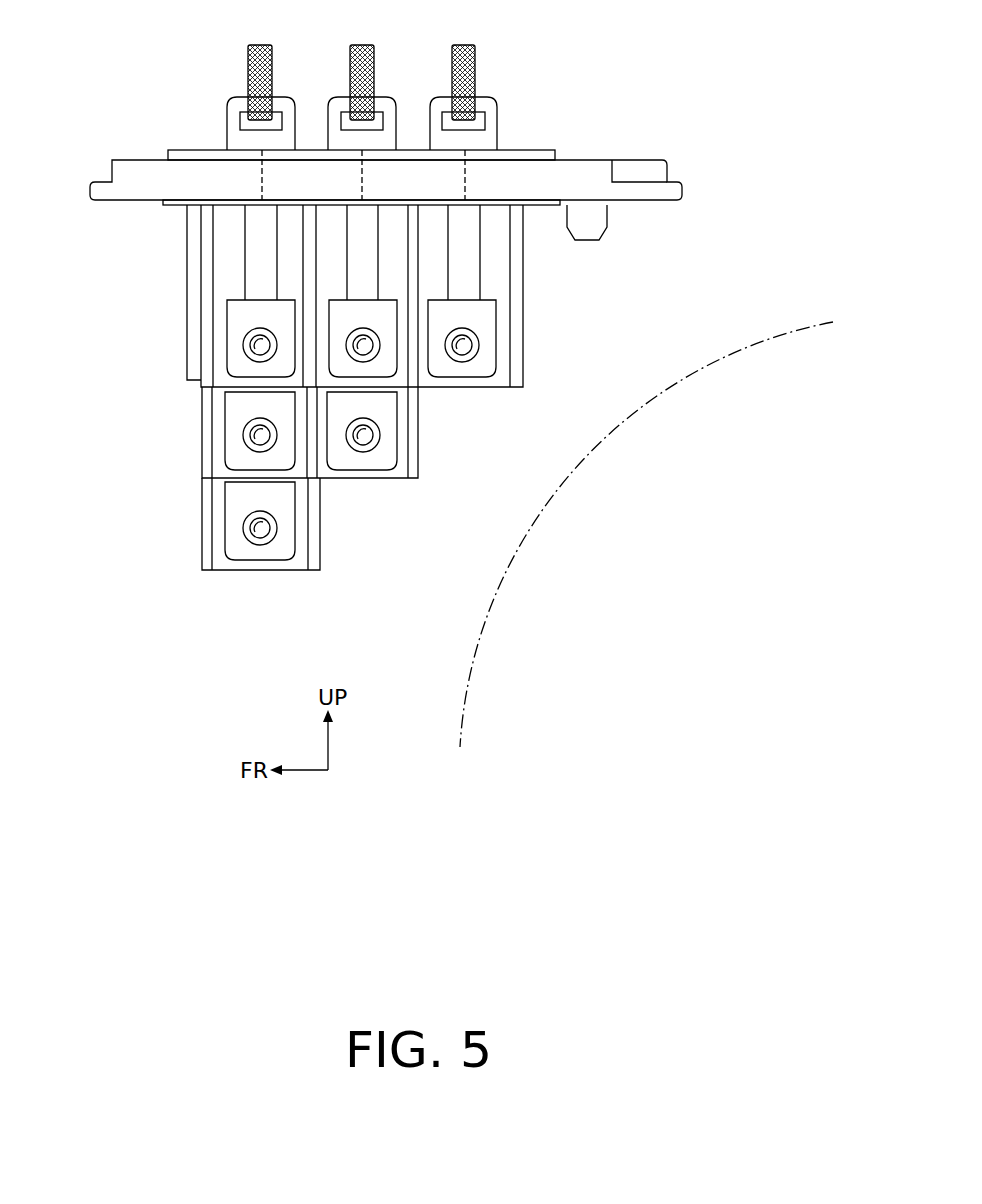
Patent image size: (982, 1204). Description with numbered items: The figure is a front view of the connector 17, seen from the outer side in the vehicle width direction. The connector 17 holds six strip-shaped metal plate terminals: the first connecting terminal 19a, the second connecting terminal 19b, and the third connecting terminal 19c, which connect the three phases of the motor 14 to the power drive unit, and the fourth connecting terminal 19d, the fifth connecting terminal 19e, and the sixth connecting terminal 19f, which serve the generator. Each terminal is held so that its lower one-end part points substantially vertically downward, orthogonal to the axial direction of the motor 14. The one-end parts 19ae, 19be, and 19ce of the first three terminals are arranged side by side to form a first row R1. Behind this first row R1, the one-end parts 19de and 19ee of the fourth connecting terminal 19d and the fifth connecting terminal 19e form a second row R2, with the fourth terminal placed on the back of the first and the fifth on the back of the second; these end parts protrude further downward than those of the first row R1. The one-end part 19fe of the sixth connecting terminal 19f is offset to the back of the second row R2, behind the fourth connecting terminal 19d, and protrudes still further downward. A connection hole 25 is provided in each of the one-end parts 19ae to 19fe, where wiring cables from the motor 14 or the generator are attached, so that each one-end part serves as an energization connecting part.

The motor 14 is at (780, 330).
The connector 17 is at (592, 155).
The first connecting terminal 19a is at (164, 191).
The second connecting terminal 19b is at (464, 191).
The third connecting terminal 19c is at (549, 211).
The fourth connecting terminal 19d is at (169, 486).
The fifth connecting terminal 19e is at (437, 442).
The sixth connecting terminal 19f is at (196, 581).
The one-end part of the first connecting terminal 19ae is at (237, 352).
The one-end part of the second connecting terminal 19be is at (390, 318).
The one-end part of the third connecting terminal 19ce is at (487, 355).
The one-end part of the fourth connecting terminal 19de is at (238, 452).
The one-end part of the fifth connecting terminal 19ee is at (385, 452).
The one-end part of the sixth connecting terminal 19fe is at (237, 542).
The connection hole 25 is at (450, 350).
The first row R1 is at (176, 363).
The second row R2 is at (187, 460).